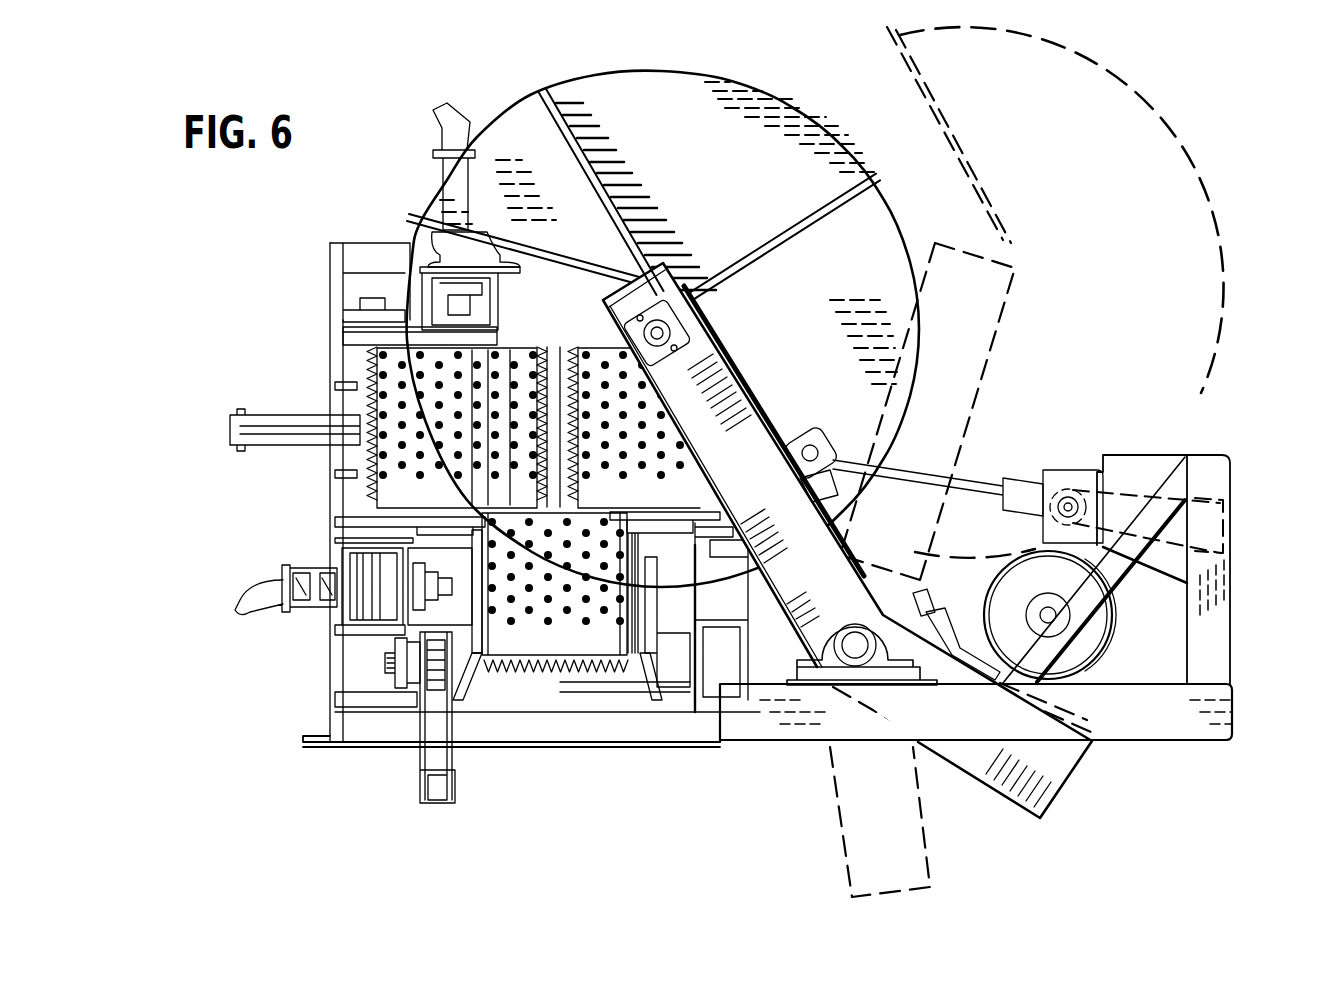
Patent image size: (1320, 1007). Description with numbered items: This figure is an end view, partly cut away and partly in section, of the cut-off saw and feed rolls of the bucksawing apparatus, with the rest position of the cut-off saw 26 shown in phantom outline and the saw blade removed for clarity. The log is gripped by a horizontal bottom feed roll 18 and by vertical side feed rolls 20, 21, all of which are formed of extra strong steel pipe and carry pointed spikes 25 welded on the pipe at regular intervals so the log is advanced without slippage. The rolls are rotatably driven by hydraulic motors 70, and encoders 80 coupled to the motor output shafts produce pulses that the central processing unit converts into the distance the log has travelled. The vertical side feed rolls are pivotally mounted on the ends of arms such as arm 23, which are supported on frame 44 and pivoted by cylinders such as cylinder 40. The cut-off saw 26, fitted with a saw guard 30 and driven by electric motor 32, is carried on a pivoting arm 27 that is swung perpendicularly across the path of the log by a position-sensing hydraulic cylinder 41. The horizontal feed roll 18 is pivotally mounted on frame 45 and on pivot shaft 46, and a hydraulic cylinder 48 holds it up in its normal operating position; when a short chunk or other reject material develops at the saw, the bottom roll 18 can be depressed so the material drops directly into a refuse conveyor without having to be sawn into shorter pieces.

The horizontal bottom feed roll 18 is at (568, 664).
The vertical side feed roll 20 is at (588, 345).
The vertical side feed roll 21 is at (368, 368).
The arm 23 is at (347, 334).
The spikes 25 is at (522, 348).
The cut-off saw 26 is at (782, 95).
The pivoting arm 27 is at (770, 415).
The saw guard 30 is at (600, 103).
The electric motor 32 is at (1125, 630).
The cylinder 40 is at (230, 426).
The position-sensing hydraulic cylinder 41 is at (1013, 470).
The frame 44 is at (355, 750).
The frame 45 is at (467, 705).
The pivot shaft 46 is at (382, 660).
The hydraulic cylinder 48 is at (430, 805).
The hydraulic motor 70 is at (410, 230).
The encoder 80 is at (433, 172).